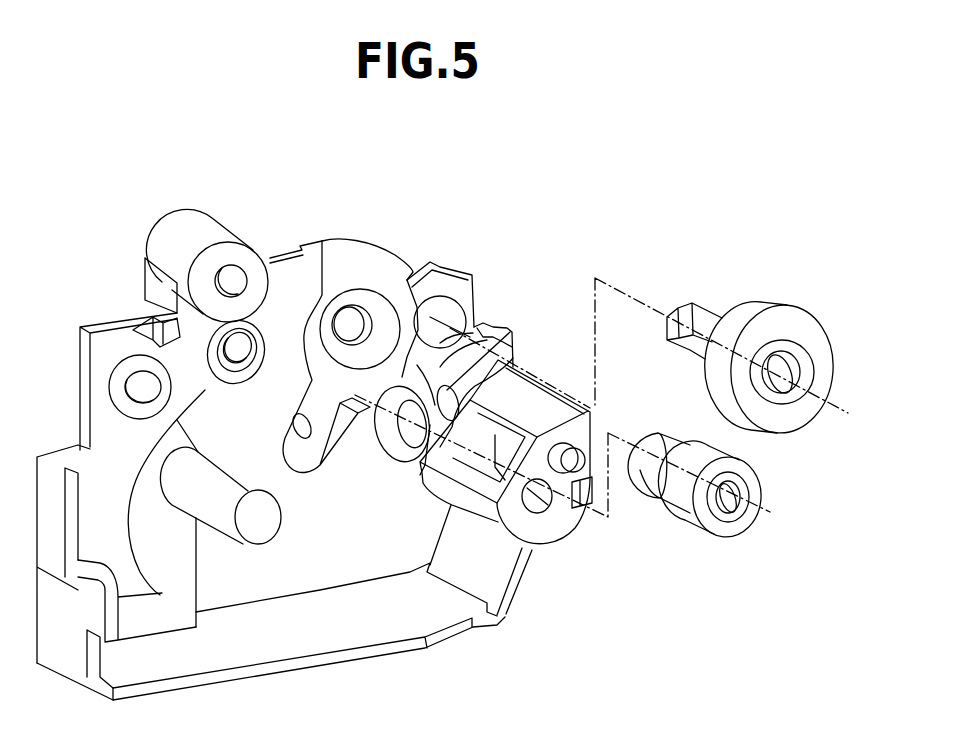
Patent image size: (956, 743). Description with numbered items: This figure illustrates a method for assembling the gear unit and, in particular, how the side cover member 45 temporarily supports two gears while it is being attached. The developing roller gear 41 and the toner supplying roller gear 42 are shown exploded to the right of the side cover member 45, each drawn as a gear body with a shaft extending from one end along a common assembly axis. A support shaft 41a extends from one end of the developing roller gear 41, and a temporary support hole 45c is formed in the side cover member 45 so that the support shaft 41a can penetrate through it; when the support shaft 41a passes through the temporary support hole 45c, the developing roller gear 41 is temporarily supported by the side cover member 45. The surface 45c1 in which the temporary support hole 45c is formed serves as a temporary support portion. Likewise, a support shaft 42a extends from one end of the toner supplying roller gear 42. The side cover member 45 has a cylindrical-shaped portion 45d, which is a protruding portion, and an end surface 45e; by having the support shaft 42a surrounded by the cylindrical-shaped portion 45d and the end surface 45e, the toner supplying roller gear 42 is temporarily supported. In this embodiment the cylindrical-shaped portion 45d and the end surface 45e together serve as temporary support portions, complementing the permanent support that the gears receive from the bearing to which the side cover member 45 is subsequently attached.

The side cover member 45 is at (118, 338).
The end surface 45e is at (386, 258).
The temporary support hole 45c is at (443, 310).
The surface 45c1 is at (473, 297).
The cylindrical-shaped portion 45d is at (517, 347).
The developing roller gear 41 is at (758, 318).
The support shaft 41a is at (698, 305).
The toner supplying roller gear 42 is at (677, 500).
The support shaft 42a is at (648, 477).